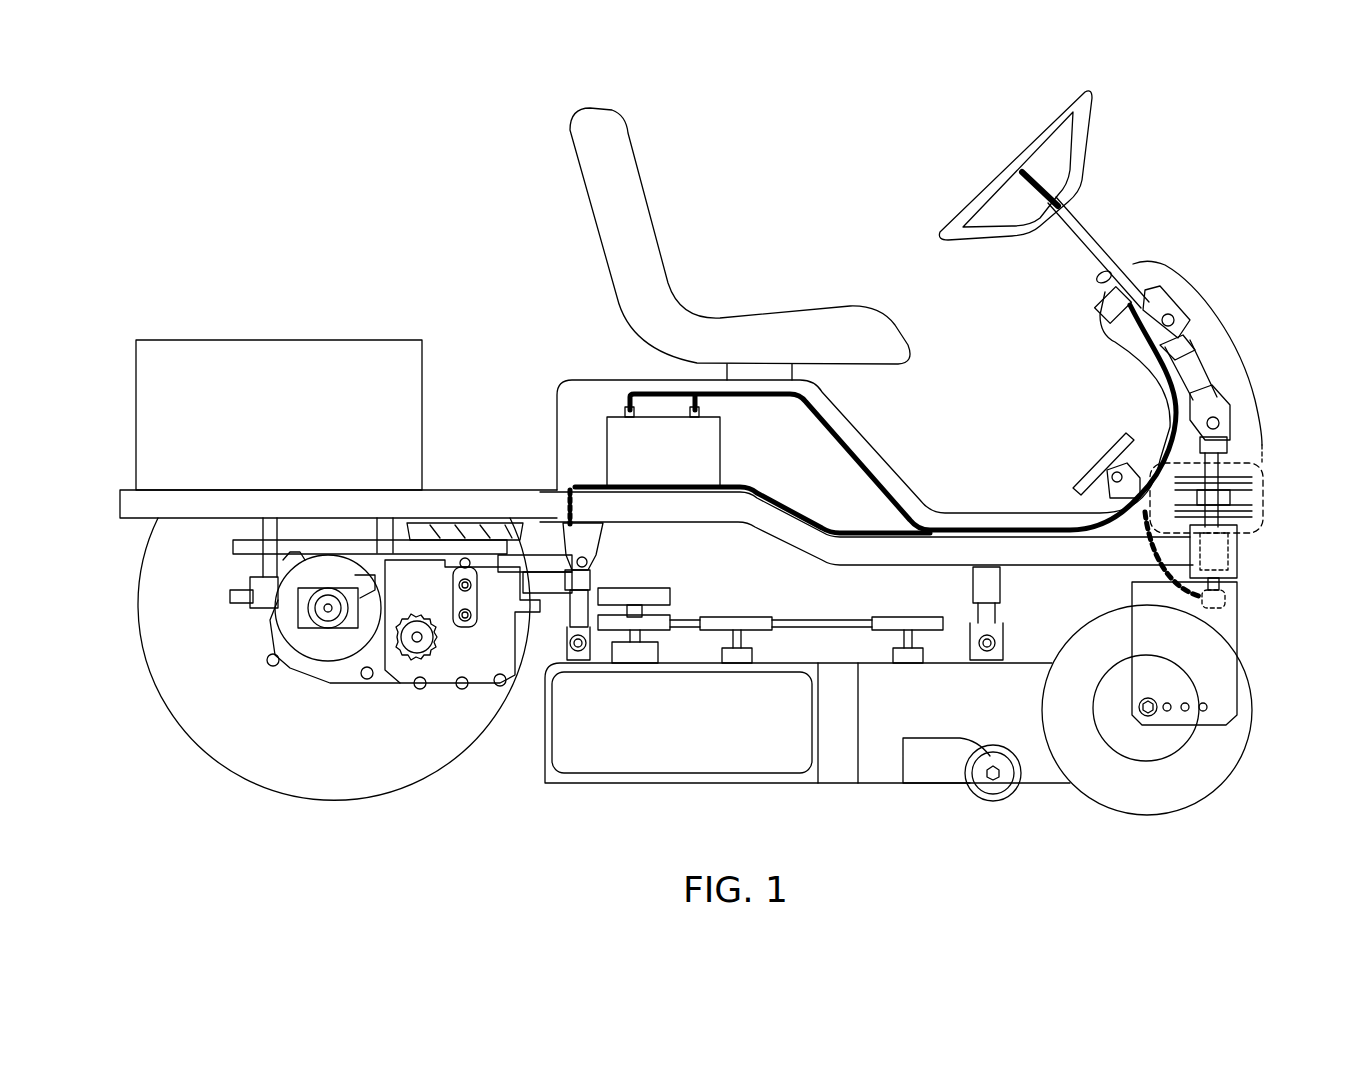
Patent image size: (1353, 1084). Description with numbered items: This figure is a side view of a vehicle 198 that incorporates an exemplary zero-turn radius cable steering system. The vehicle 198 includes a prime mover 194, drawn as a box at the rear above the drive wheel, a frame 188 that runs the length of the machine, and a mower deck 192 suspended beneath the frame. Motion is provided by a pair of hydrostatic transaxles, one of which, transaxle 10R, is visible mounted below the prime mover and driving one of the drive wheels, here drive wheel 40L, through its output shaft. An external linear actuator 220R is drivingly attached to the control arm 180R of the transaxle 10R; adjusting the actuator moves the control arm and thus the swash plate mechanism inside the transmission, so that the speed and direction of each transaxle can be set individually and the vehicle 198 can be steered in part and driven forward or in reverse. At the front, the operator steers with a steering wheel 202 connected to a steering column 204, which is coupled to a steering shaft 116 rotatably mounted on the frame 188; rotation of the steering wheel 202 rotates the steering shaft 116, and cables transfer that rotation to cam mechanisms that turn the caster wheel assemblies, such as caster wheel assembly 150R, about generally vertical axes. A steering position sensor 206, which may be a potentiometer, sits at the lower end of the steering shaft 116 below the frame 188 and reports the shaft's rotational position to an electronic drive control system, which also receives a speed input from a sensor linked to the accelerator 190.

The vehicle 198 is at (305, 175).
The prime mover 194 is at (302, 428).
The actuator 220R is at (537, 563).
The transaxle 10R is at (245, 655).
The drive wheel 40L is at (348, 753).
The control arm 180R is at (468, 598).
The mower deck 192 is at (962, 710).
The frame 188 is at (902, 570).
The accelerator 190 is at (1093, 470).
The steering shaft 116 is at (1220, 464).
The steering position sensor 206 is at (1225, 598).
The caster wheel assembly 150R is at (1248, 785).
The steering wheel 202 is at (988, 180).
The steering column 204 is at (1105, 240).